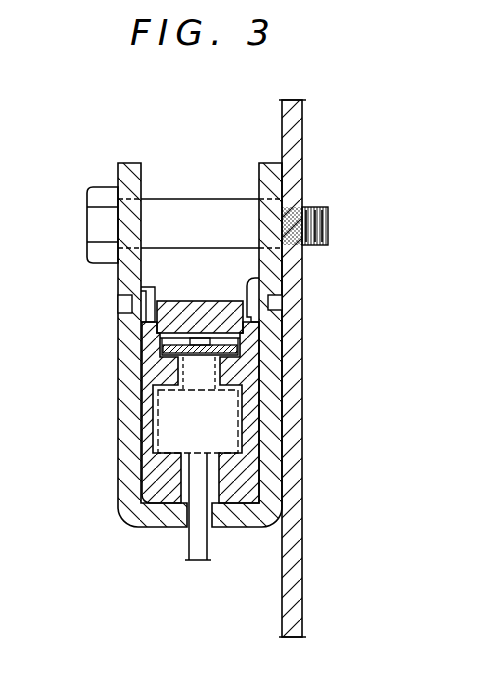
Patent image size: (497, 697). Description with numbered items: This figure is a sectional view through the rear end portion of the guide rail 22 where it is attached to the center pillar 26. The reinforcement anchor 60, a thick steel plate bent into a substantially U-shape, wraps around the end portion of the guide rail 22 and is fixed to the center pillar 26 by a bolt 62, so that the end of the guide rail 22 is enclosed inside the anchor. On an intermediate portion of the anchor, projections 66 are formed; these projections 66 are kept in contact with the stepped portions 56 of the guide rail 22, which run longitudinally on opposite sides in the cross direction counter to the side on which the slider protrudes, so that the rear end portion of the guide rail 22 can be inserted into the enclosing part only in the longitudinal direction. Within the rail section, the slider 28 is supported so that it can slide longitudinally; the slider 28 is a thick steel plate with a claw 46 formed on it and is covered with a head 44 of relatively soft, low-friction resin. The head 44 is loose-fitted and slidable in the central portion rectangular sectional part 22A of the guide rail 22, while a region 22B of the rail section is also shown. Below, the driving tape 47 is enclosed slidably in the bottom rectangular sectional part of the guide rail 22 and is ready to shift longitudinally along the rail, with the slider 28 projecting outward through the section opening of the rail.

The reinforcement anchor 60 is at (143, 178).
The center pillar 26 is at (302, 128).
The guide rail 22 is at (225, 273).
The bolt 62 is at (87, 228).
The projections 66 is at (150, 292).
The stepped portions 56 is at (118, 316).
The head 44 is at (143, 405).
The claw 46 is at (197, 338).
The plate 22B is at (160, 338).
The driving tape 47 is at (240, 344).
The central portion rectangular sectional part 22A is at (165, 440).
The slider 28 is at (187, 545).